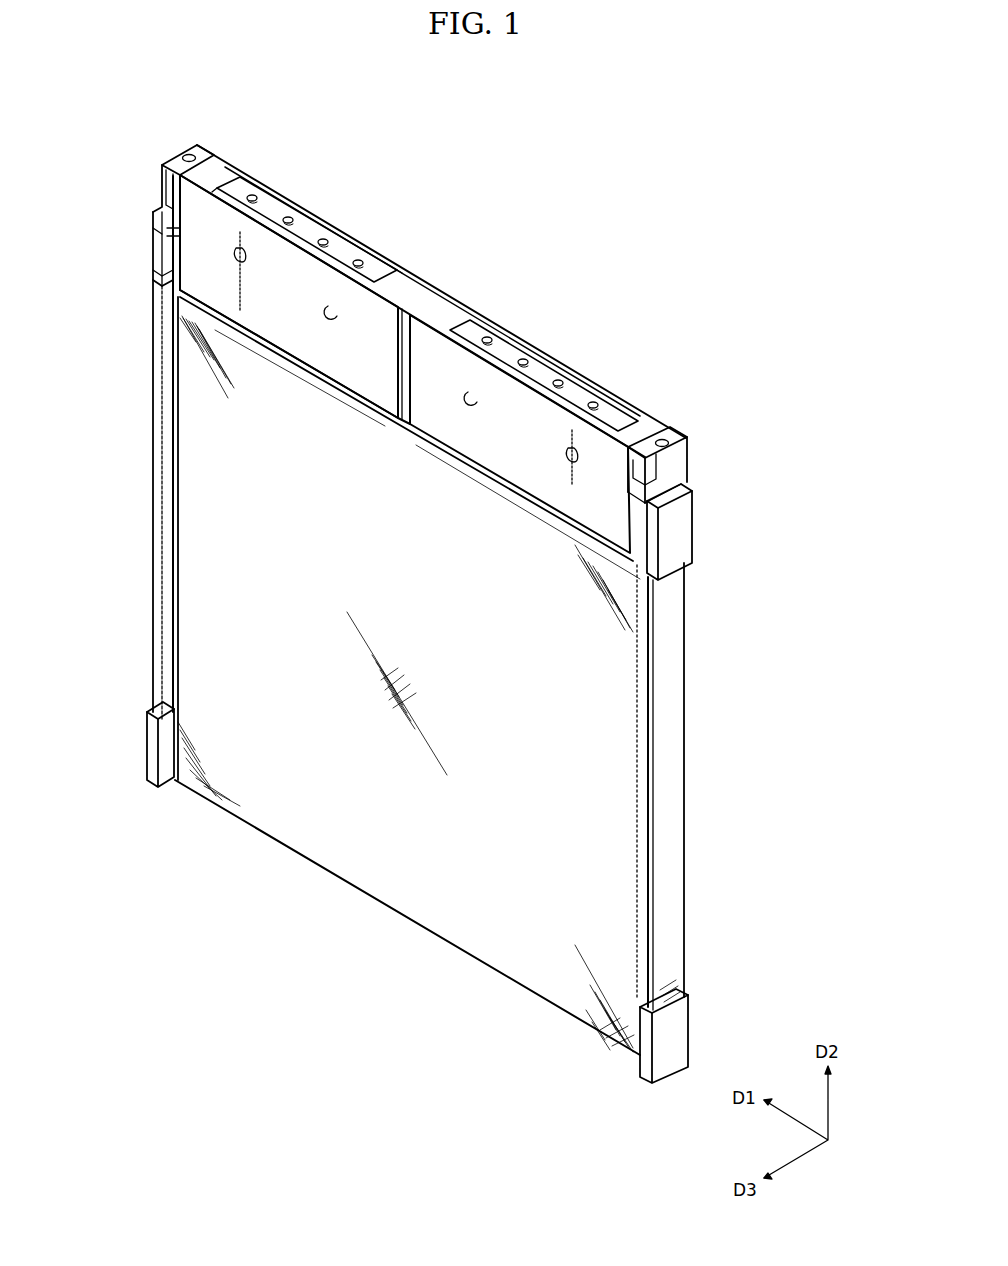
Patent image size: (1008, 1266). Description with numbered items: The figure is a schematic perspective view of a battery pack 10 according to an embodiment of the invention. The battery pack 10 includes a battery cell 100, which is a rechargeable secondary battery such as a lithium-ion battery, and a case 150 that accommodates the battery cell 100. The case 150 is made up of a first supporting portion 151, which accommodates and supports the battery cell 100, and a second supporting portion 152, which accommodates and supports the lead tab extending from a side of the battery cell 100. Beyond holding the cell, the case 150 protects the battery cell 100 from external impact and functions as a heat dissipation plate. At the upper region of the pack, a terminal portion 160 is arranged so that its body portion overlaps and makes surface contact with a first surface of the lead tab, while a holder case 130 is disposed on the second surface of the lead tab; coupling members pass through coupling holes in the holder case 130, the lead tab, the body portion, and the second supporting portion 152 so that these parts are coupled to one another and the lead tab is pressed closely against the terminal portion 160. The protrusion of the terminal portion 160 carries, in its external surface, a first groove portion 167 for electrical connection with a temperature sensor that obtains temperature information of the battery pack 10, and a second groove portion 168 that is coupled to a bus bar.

The battery pack 10 is at (620, 236).
The battery cell 100 is at (583, 786).
The holder case 130 is at (200, 268).
The case 150 is at (762, 548).
The first supporting portion 151 is at (676, 607).
The second supporting portion 152 is at (686, 548).
The terminal portion 160 is at (398, 268).
The first groove portion 167 is at (254, 195).
The second groove portion 168 is at (323, 240).